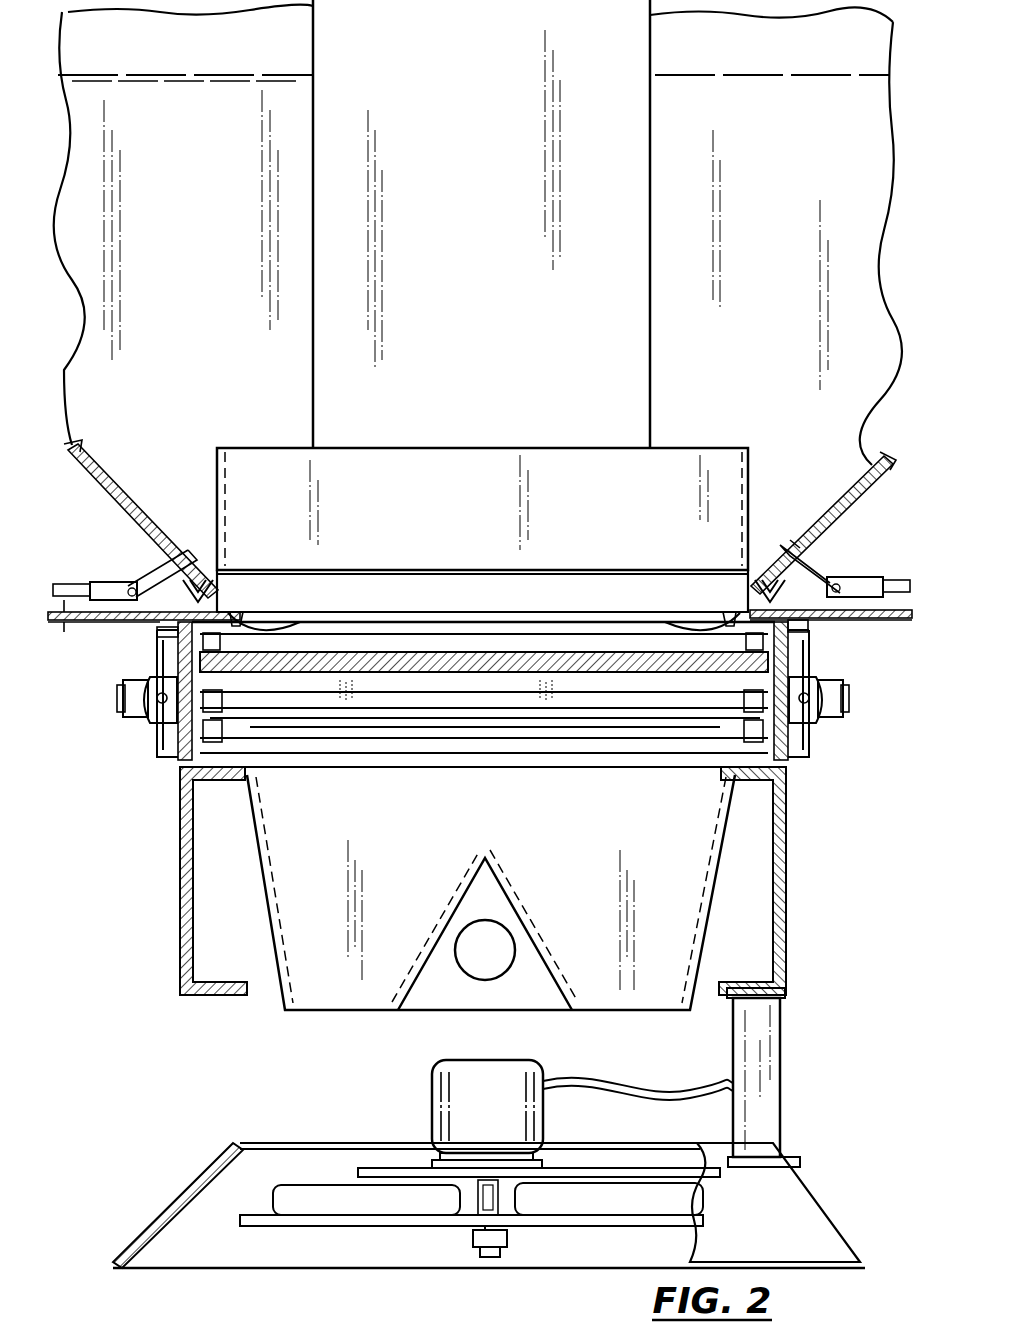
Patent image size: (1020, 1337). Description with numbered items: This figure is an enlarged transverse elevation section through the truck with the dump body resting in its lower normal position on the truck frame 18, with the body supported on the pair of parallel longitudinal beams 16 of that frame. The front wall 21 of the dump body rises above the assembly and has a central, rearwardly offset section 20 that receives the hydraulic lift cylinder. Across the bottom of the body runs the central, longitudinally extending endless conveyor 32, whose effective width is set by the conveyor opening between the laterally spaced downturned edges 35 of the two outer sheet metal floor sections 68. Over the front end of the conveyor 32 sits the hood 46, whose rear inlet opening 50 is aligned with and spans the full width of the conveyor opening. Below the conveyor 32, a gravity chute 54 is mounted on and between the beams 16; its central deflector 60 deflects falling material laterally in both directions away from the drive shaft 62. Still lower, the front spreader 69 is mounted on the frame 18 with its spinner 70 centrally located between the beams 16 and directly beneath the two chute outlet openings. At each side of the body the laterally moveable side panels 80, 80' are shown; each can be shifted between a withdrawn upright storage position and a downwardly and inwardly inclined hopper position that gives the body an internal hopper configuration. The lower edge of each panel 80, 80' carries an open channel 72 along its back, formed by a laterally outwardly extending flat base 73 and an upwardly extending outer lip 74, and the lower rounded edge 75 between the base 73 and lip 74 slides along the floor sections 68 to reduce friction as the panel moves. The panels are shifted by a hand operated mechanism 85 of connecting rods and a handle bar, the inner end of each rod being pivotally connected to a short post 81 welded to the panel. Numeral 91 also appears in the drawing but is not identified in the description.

The longitudinal beams 16 is at (182, 940).
The truck frame 18 is at (800, 893).
The rearwardly offset section 20 is at (441, 164).
The front wall 21 is at (164, 224).
The endless conveyor 32 is at (283, 775).
The downturned edges 35 is at (293, 624).
The hood 46 is at (427, 506).
The rear inlet opening 50 is at (573, 580).
The gravity chute 54 is at (668, 902).
The central deflector 60 is at (525, 892).
The drive shaft 62 is at (500, 978).
The outer sheet metal floor sections 68 is at (95, 625).
The front spreader 69 is at (325, 1245).
The spinner 70 is at (608, 1200).
The open channel 72 is at (186, 580).
The flat base 73 is at (236, 612).
The outer lip 74 is at (147, 540).
The lower rounded edge 75 is at (157, 637).
The side panel 80 is at (141, 511).
The side panel 80' is at (823, 506).
The post 81 is at (136, 578).
The hand operated mechanism 85 is at (93, 575).
The link 91 is at (790, 540).